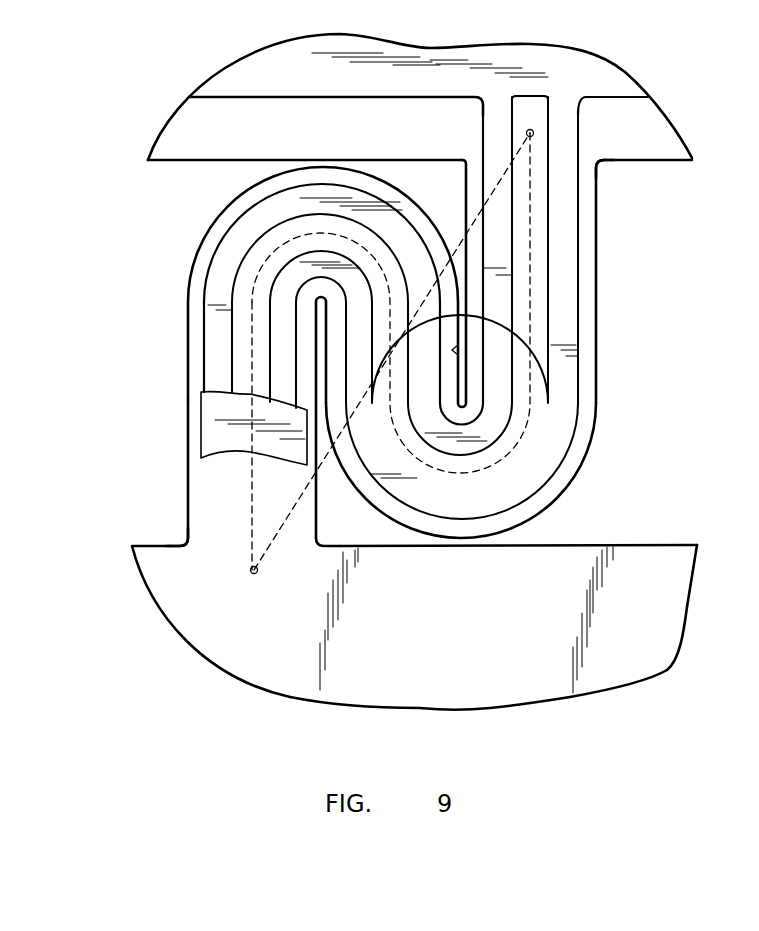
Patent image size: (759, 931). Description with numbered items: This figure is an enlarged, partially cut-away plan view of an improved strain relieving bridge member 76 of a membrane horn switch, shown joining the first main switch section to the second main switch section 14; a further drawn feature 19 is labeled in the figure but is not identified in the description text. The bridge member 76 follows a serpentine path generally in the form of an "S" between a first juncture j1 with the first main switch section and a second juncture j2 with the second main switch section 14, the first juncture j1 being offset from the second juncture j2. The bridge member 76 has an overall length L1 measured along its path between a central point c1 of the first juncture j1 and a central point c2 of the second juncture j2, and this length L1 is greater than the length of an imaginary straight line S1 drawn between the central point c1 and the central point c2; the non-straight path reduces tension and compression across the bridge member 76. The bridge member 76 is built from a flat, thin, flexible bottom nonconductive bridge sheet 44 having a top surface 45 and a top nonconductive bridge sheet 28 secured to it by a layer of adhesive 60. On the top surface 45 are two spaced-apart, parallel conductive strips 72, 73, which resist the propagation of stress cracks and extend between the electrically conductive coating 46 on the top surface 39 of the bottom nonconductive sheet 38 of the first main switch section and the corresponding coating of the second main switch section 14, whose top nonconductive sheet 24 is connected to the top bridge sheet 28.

The second main switch section 14 is at (418, 617).
The inner wall member 19 is at (326, 345).
The top nonconductive sheet 24 is at (528, 687).
The top nonconductive bridge sheet 28 is at (215, 490).
The bottom nonconductive sheet 38 is at (680, 160).
The top surface 39 is at (202, 148).
The bottom nonconductive bridge sheet 44 is at (600, 380).
The top surface 45 is at (590, 223).
The electrically conductive coating 46 is at (617, 97).
The layer of adhesive 60 is at (210, 430).
The conductive coating strip 72 is at (515, 263).
The conductive coating strip 73 is at (580, 323).
The strain relieving bridge member 76 is at (135, 293).
The first juncture j1 is at (590, 151).
The second juncture j2 is at (197, 553).
The overall length L1 is at (254, 505).
The imaginary straight line S1 is at (281, 522).
The central point of first juncture c1 is at (531, 129).
The central point of second juncture c2 is at (256, 577).